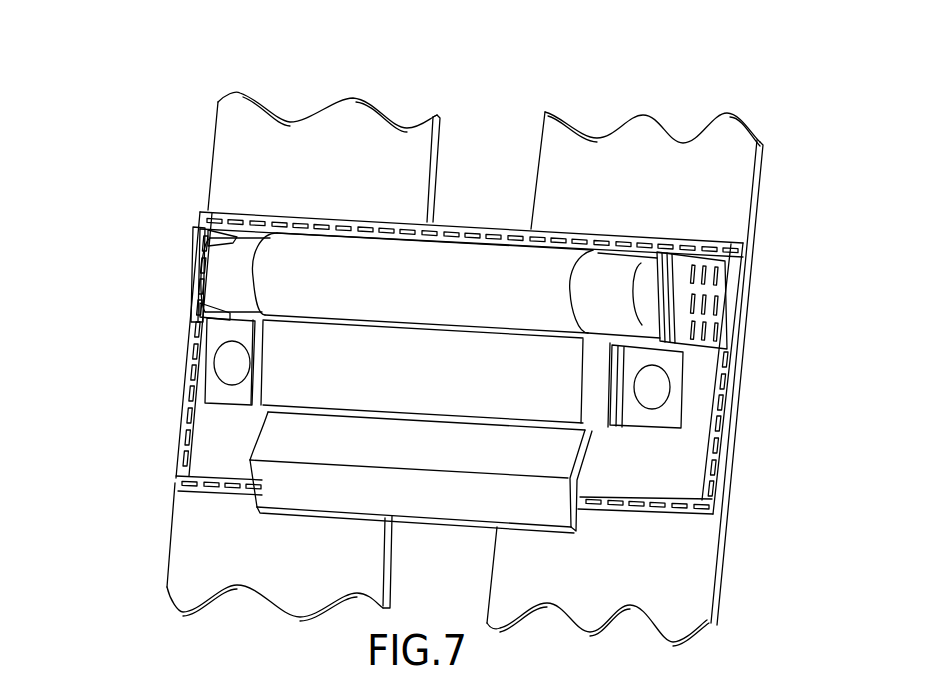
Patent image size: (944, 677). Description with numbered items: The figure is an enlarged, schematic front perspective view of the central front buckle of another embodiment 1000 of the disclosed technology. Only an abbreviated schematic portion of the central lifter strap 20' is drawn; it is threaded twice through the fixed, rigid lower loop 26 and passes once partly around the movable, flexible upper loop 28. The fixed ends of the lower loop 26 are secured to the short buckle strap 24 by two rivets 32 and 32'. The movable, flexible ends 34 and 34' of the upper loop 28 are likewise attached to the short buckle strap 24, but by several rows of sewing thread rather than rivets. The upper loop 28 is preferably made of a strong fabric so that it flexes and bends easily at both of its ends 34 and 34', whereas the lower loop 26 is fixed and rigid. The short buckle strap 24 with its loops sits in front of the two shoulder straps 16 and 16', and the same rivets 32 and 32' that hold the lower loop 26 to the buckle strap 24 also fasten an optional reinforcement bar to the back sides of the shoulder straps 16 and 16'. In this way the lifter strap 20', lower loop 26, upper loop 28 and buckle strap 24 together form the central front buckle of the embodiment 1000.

The embodiment 1000 is at (163, 131).
The shoulder strap 16 is at (303, 337).
The shoulder strap 16' is at (625, 363).
The short buckle strap 24 is at (687, 487).
The movable, flexible upper loop 28 is at (610, 272).
The movable, flexible end 34 is at (161, 259).
The movable, flexible end 34' is at (751, 300).
The fixed, rigid lower loop 26 is at (432, 410).
The rivet 32 is at (157, 370).
The rivet 32' is at (727, 387).
The central lifter strap 20' is at (421, 505).